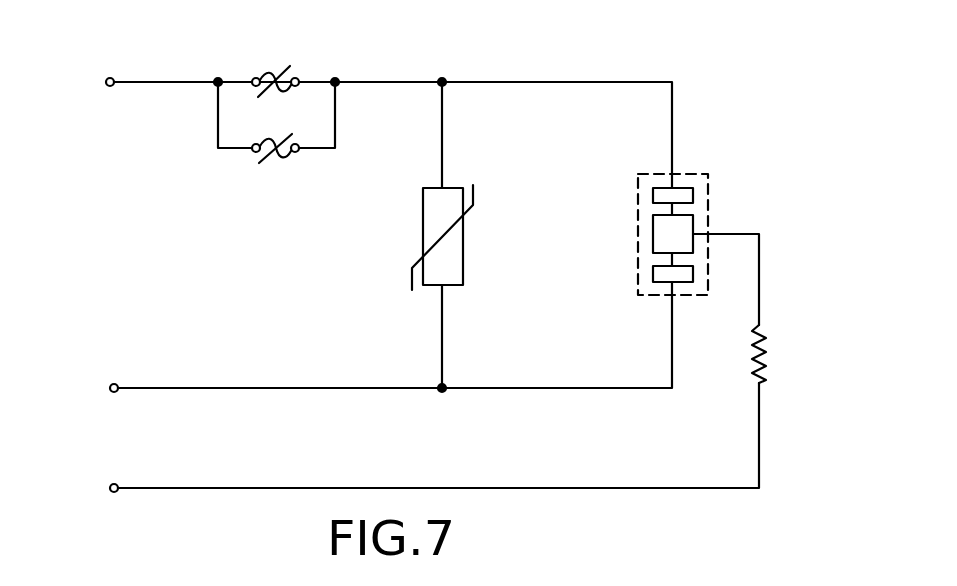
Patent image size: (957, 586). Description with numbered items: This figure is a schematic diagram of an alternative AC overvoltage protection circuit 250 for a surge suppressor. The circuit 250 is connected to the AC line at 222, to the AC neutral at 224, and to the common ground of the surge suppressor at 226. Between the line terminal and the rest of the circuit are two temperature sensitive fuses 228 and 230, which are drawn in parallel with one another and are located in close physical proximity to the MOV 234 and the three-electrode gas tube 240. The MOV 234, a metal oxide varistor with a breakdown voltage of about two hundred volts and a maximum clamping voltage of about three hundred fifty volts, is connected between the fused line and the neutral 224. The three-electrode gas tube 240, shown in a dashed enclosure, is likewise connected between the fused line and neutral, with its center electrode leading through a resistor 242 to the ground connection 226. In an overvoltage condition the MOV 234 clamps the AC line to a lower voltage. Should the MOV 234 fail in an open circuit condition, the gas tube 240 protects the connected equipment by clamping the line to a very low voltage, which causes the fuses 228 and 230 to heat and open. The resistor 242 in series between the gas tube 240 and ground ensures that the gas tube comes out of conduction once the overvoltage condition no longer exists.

The AC line connection 222 is at (105, 80).
The AC neutral connection 224 is at (109, 386).
The common ground connection 226 is at (109, 486).
The temperature sensitive fuse 228 is at (269, 73).
The temperature sensitive fuse 230 is at (281, 157).
The MOV 234 is at (465, 262).
The three-electrode gas tube 240 is at (707, 207).
The resistor 242 is at (763, 358).
The AC overvoltage protection circuit 250 is at (713, 125).